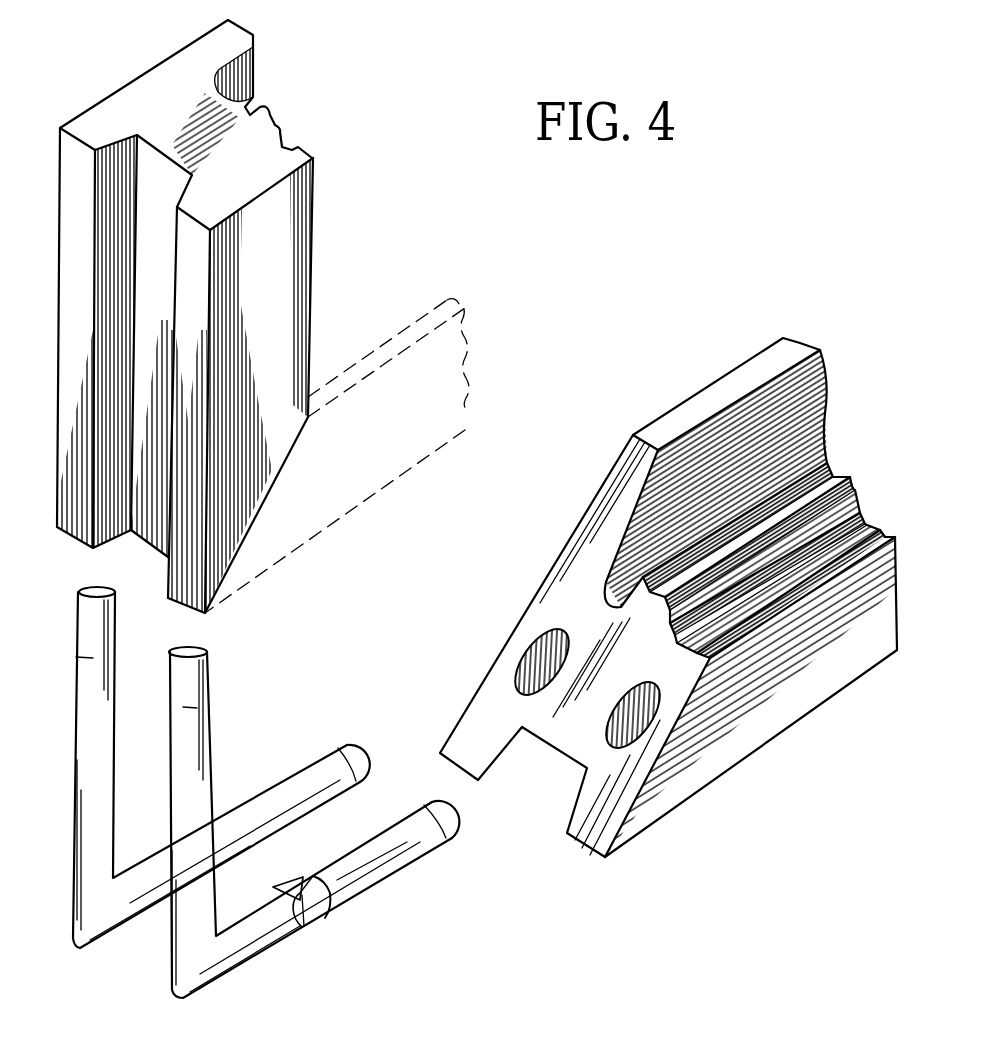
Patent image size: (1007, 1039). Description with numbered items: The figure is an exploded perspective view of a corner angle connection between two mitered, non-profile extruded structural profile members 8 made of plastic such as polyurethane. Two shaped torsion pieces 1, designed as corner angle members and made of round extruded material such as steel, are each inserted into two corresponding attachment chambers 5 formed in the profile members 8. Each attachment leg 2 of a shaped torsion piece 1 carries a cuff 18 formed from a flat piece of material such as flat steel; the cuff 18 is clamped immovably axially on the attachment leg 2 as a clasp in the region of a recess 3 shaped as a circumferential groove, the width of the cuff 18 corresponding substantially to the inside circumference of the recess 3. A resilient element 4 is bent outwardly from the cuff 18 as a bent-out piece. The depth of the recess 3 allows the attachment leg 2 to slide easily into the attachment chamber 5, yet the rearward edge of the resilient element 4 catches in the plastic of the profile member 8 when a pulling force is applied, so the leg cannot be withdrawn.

The shaped torsion piece 1 is at (266, 792).
The attachment leg 2 is at (178, 752).
The recess 3 is at (322, 920).
The resilient element 4 is at (296, 870).
The attachment chamber 5 is at (530, 650).
The structural profile member 8 is at (332, 204).
The cuff 18 is at (310, 920).